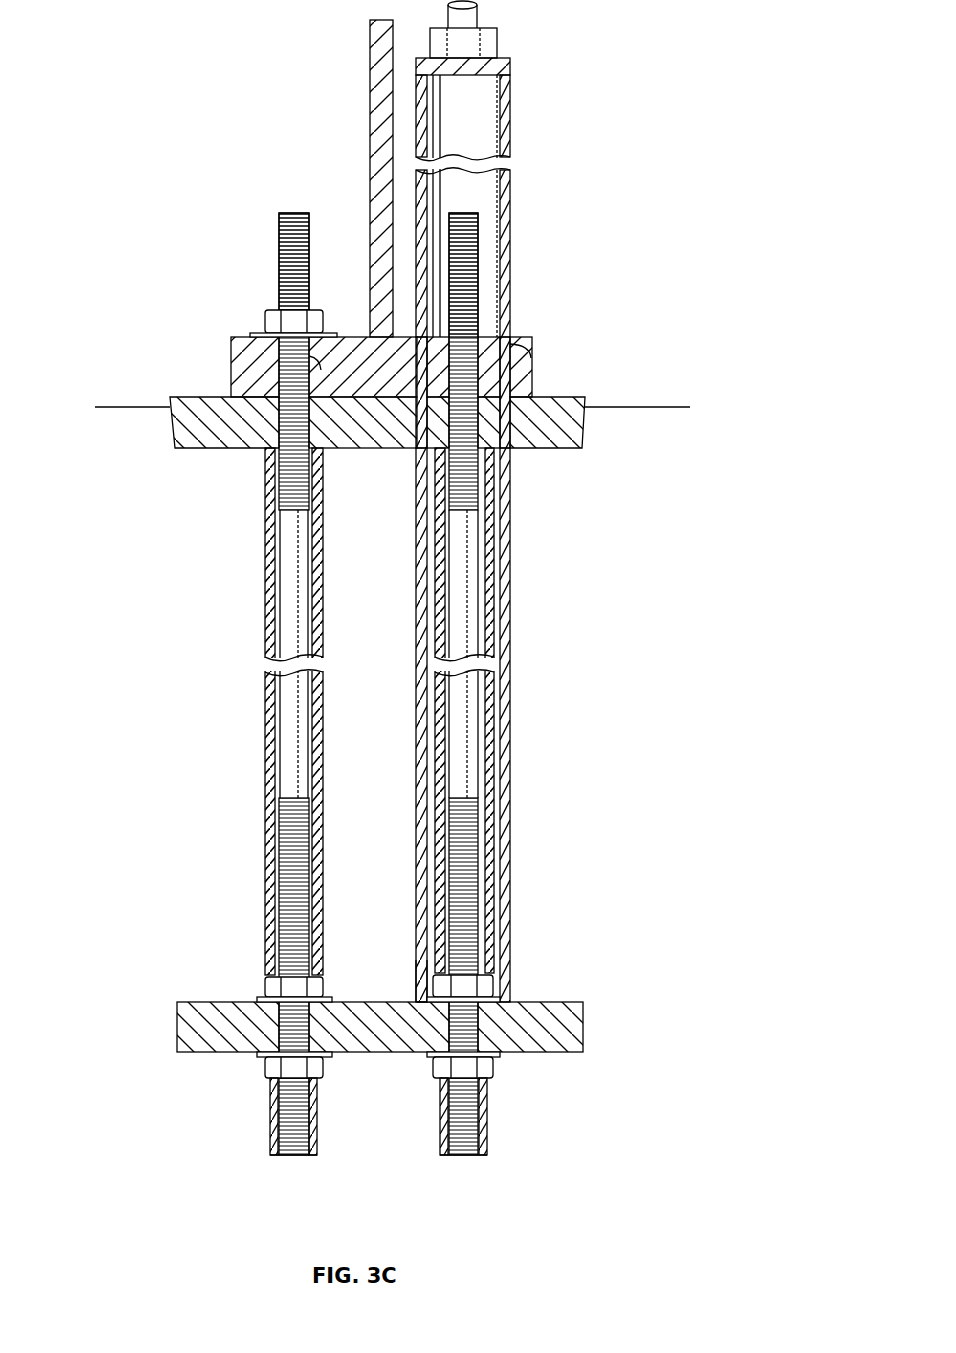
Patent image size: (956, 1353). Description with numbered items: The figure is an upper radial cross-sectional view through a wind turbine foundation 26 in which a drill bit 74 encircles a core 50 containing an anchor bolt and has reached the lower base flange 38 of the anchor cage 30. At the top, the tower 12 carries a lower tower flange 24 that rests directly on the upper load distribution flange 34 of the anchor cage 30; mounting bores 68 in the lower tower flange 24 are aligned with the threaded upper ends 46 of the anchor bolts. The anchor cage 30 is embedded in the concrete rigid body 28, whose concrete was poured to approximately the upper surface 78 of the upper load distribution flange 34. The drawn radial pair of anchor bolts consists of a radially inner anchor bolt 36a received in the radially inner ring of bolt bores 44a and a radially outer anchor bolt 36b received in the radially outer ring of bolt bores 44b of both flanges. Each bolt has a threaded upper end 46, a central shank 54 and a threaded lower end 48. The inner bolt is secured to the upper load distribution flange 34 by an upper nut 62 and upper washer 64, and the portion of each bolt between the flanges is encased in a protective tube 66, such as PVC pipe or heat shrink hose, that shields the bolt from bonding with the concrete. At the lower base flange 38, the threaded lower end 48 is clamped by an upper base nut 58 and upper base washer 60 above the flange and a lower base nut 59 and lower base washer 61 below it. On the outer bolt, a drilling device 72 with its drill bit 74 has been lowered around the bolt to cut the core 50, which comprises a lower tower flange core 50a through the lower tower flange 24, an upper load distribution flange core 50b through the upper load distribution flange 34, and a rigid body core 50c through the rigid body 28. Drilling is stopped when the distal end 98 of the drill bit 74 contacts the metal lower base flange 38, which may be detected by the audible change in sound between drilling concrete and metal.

The tower 12 is at (369, 88).
The lower tower flange 24 is at (229, 357).
The foundation 26 is at (88, 112).
The rigid body 28 is at (110, 405).
The anchor cage 30 is at (258, 241).
The upper load distribution flange 34 is at (405, 403).
The radially inner anchor bolt 36a is at (289, 210).
The radially outer anchor bolt 36b is at (474, 210).
The lower base flange 38 is at (176, 1011).
The radially inner ring of bolt bores 44a is at (172, 634).
The radially outer ring of bolt bores 44b is at (589, 622).
The threaded upper end 46 is at (279, 239).
The threaded lower end 48 is at (293, 1138).
The core 50 is at (482, 586).
The lower tower flange core 50a is at (489, 342).
The upper load distribution flange core 50b is at (492, 412).
The rigid body core 50c is at (496, 600).
The central shank 54 is at (292, 613).
The upper base nut 58 is at (267, 980).
The lower base nut 59 is at (268, 1068).
The upper base washer 60 is at (262, 999).
The lower base washer 61 is at (262, 1055).
The upper nut 62 is at (278, 308).
The upper washer 64 is at (262, 335).
The protective tube 66 is at (270, 727).
The mounting bore 68 is at (309, 364).
The drilling device 72 is at (511, 60).
The drill bit 74 is at (418, 985).
The upper surface 78 is at (586, 430).
The distal end 98 is at (422, 1005).